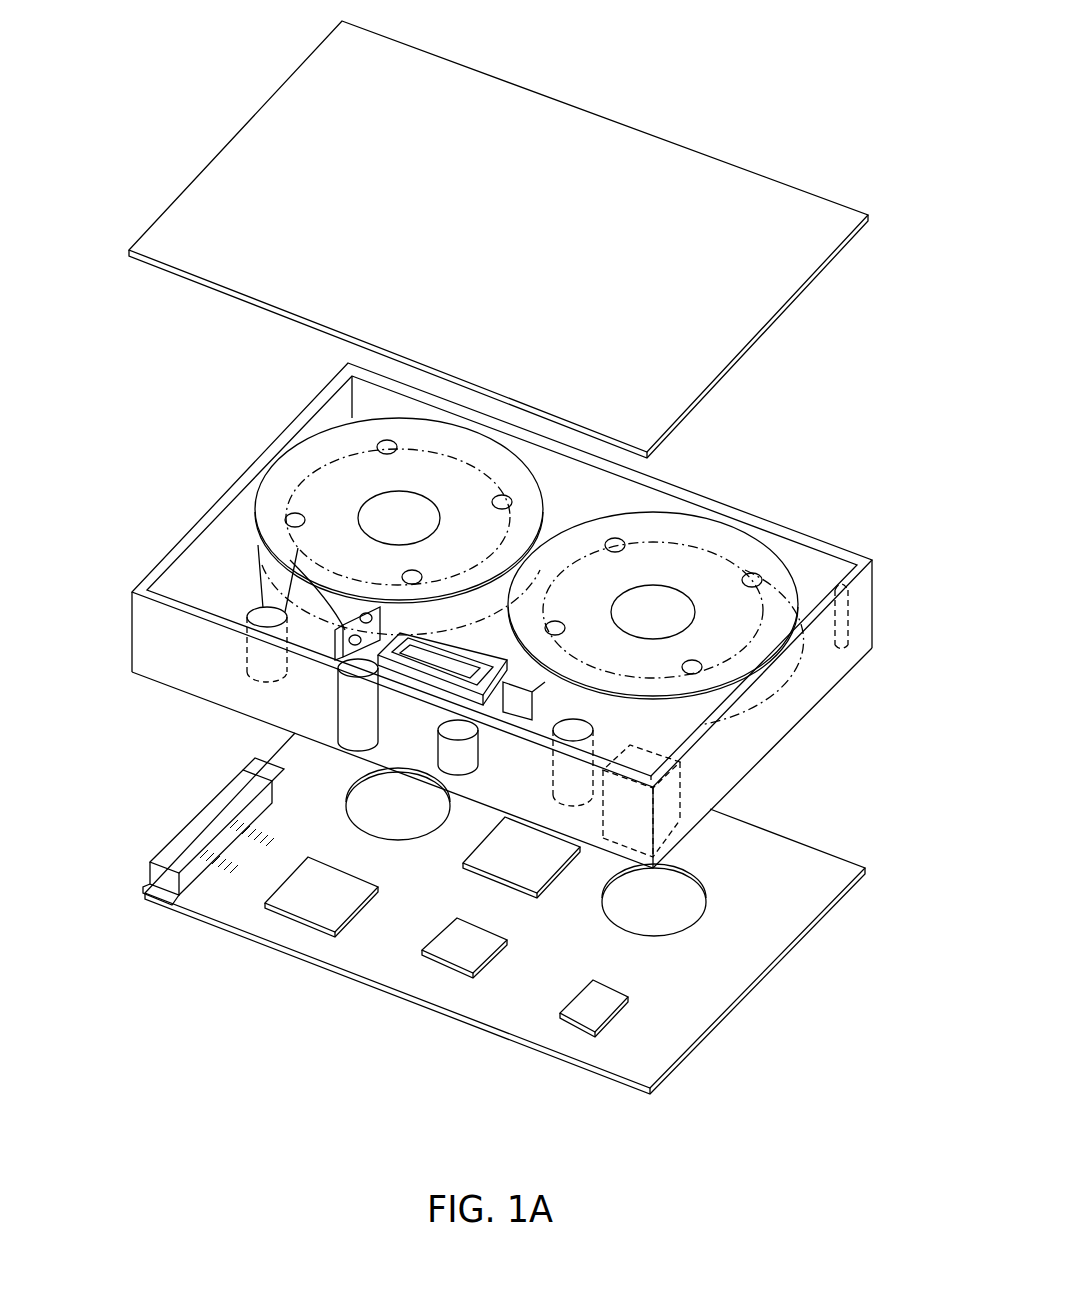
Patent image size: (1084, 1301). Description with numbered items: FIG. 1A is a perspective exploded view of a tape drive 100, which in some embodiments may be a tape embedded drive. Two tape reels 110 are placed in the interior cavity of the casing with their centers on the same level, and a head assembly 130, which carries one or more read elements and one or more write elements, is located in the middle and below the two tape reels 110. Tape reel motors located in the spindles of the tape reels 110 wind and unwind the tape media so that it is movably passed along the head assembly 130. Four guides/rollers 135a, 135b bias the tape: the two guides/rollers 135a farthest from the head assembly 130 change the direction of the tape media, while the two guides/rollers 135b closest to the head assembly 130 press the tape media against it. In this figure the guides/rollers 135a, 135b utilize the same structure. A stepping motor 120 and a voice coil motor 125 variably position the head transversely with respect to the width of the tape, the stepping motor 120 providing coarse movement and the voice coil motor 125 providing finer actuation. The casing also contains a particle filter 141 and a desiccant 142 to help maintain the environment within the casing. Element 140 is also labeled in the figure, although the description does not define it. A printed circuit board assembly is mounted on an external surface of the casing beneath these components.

The tape drive 100 is at (773, 88).
The tape reels 110 is at (453, 425).
The stepping motor 120 is at (322, 632).
The voice coil motor 125 is at (413, 640).
The head assembly 130 is at (428, 676).
The guides/rollers 135a is at (250, 607).
The guides/rollers 135b is at (342, 663).
The disk hub 140 is at (367, 500).
The particle filter 141 is at (850, 623).
The desiccant 142 is at (667, 807).